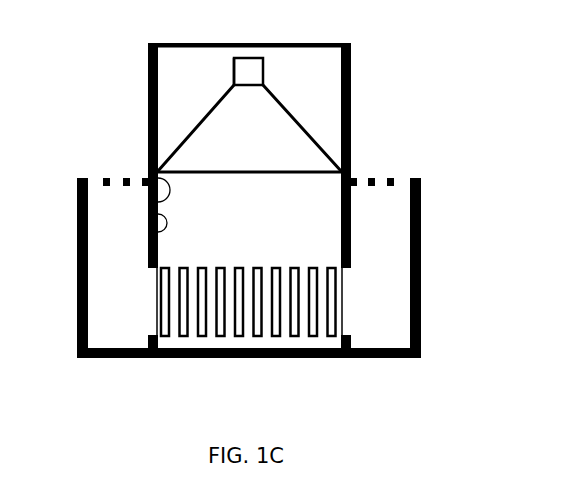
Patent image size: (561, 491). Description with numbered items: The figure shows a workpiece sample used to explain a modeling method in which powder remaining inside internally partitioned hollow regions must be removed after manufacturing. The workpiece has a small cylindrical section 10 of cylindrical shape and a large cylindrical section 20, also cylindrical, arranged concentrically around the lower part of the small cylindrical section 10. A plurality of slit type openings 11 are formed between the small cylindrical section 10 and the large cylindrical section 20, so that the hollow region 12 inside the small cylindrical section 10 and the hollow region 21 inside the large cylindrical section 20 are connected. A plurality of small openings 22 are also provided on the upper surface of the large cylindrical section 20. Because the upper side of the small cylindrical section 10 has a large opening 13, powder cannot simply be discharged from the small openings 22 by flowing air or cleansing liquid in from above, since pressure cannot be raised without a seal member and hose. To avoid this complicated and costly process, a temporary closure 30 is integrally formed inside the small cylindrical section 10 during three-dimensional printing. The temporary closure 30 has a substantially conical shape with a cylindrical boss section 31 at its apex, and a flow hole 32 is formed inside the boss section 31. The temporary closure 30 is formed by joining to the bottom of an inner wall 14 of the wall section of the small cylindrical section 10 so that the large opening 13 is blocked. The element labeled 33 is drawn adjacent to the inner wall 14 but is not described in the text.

The small cylindrical section 10 is at (351, 110).
The slit type openings 11 is at (164, 337).
The hollow region 12 is at (310, 222).
The large opening 13 is at (301, 62).
The inner wall 14 is at (158, 233).
The large cylindrical section 20 is at (421, 262).
The hollow region 21 is at (389, 296).
The small openings 22 is at (116, 178).
The temporary closure 30 is at (290, 108).
The cylindrical boss section 31 is at (233, 70).
The flow hole 32 is at (243, 62).
The upper opening 33 is at (158, 200).